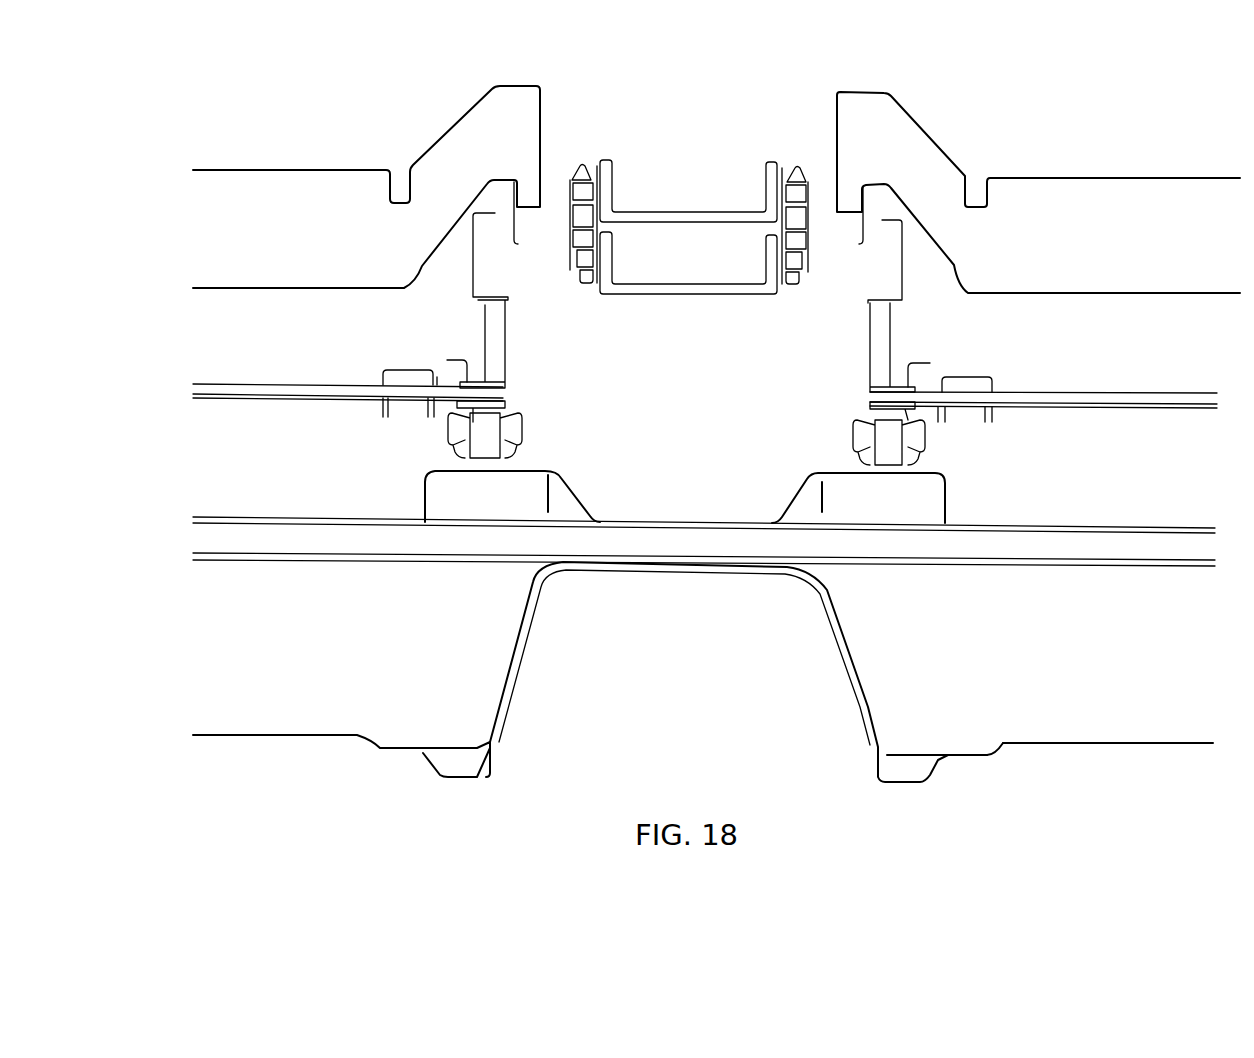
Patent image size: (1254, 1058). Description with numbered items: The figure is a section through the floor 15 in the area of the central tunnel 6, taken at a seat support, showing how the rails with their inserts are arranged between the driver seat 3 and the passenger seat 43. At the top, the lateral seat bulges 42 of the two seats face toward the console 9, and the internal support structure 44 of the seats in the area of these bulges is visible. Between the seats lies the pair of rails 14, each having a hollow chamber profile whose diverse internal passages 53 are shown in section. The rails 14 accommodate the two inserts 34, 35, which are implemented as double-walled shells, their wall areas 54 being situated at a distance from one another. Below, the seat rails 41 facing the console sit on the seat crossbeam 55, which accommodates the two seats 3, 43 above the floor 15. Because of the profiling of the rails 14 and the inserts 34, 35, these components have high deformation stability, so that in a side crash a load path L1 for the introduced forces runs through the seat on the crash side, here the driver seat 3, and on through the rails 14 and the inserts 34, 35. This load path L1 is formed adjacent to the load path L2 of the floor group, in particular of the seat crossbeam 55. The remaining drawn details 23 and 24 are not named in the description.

The driver seat 3 is at (360, 112).
The central tunnel 6 is at (893, 630).
The console 9 is at (767, 127).
The rail 14 is at (589, 148).
The floor 15 is at (322, 735).
The latching hook 23 is at (590, 190).
The latching hook 24 is at (578, 266).
The insert 34 is at (641, 173).
The insert 35 is at (677, 324).
The seat rail 41 is at (530, 396).
The lateral seat bulge 42 is at (452, 152).
The passenger seat 43 is at (1057, 132).
The internal support structure 44 is at (526, 334).
The internal passage 53 is at (578, 176).
The wall area 54 is at (615, 196).
The seat crossbeam 55 is at (321, 535).
The load path L1 is at (347, 290).
The load path L2 is at (420, 597).